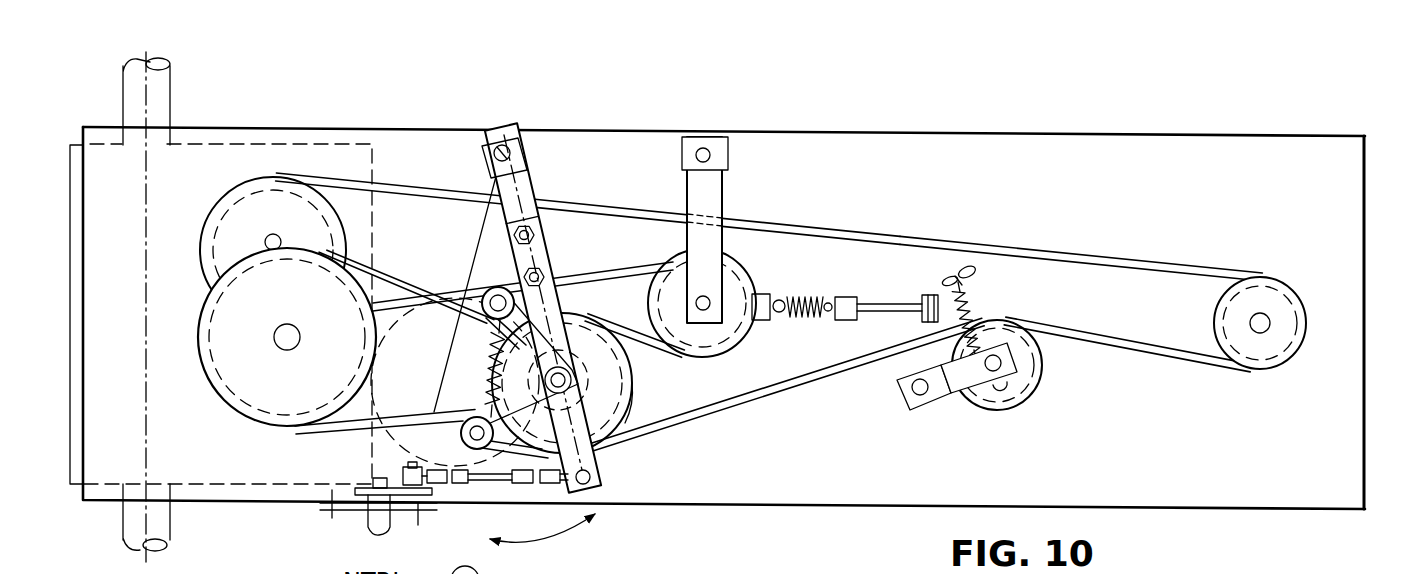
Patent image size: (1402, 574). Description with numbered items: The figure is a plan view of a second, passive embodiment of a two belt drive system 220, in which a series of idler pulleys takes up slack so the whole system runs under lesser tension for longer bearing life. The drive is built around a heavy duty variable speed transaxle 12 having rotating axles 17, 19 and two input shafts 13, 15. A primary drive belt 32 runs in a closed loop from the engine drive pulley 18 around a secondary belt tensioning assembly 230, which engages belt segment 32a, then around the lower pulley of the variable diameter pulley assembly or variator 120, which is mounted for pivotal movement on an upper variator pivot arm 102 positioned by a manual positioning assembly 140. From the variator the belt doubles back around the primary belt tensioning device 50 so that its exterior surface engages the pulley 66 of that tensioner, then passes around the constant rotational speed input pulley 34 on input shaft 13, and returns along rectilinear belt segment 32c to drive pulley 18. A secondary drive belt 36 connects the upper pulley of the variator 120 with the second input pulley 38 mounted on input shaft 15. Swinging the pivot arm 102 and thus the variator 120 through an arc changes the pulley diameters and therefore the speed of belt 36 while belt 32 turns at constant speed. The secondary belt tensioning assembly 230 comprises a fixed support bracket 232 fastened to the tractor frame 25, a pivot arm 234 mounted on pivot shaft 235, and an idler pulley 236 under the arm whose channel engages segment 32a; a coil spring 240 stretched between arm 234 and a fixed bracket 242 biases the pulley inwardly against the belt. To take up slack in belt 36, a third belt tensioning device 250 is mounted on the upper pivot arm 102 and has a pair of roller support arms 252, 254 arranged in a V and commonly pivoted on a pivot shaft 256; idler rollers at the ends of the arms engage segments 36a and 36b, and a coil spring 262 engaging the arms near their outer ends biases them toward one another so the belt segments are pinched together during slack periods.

The transaxle 12 is at (160, 449).
The input shaft 13 is at (280, 240).
The input shaft 15 is at (300, 340).
The rotating axle 17 is at (172, 97).
The engine drive pulley 18 is at (1272, 314).
The rotating axle 19 is at (172, 520).
The tractor frame 25 is at (1030, 138).
The primary drive belt 32 is at (1022, 252).
The belt segment 32a is at (1120, 348).
The belt segment 32c is at (918, 243).
The constant rotational speed input pulley 34 is at (232, 230).
The secondary drive belt 36 is at (363, 257).
The belt segment 36a is at (385, 281).
The belt segment 36b is at (340, 430).
The second input pulley 38 is at (266, 384).
The primary belt tensioning device 50 is at (744, 254).
The pulley 66 is at (733, 333).
The upper variator pivot arm 102 is at (548, 233).
The variable diameter pulley assembly 120 is at (601, 394).
The manual positioning assembly 140 is at (352, 523).
The belt drive system 220 is at (806, 306).
The secondary belt tensioning assembly 230 is at (947, 406).
The fixed support bracket 232 is at (905, 403).
The pivot arm 234 is at (949, 405).
The pivot shaft 235 is at (897, 384).
The idler pulley 236 is at (1040, 395).
The coil spring 240 is at (981, 311).
The bracket 242 is at (945, 273).
The third belt tensioning device 250 is at (540, 411).
The roller support arm 252 is at (634, 373).
The roller support arm 254 is at (501, 415).
The pivot shaft 256 is at (636, 412).
The coil spring 262 is at (487, 375).